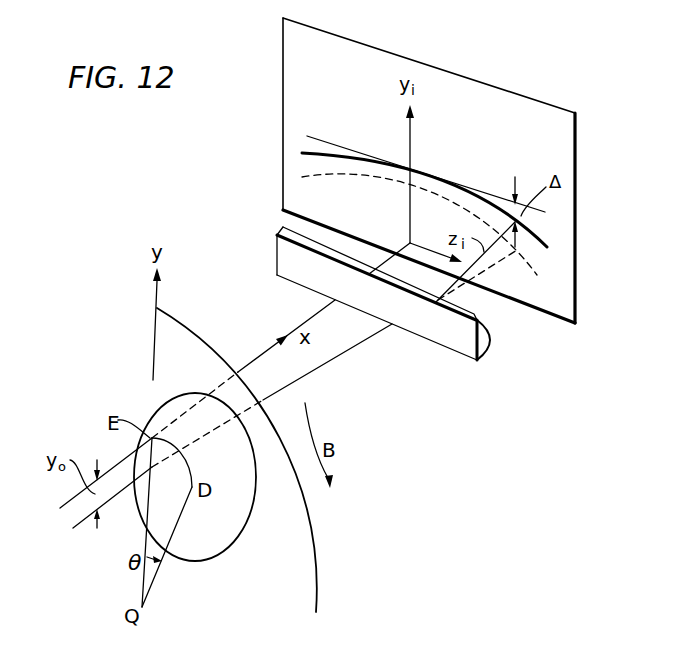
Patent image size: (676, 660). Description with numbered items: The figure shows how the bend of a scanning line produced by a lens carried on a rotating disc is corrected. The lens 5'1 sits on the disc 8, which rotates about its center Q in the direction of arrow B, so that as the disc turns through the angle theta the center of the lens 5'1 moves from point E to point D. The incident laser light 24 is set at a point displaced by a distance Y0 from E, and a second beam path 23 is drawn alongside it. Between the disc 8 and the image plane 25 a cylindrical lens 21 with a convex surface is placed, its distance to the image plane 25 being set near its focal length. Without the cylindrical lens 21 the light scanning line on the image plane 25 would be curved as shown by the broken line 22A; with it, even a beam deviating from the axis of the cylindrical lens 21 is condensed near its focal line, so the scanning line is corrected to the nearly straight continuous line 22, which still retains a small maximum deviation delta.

The cylindrical lens 21 is at (468, 357).
The continuous line 22 is at (547, 249).
The broken line 22A is at (517, 257).
The incident light beam 23 is at (81, 522).
The incident laser light 24 is at (353, 347).
The image plane 25 is at (577, 290).
The lens 5'1 is at (204, 491).
The disc 8 is at (316, 575).